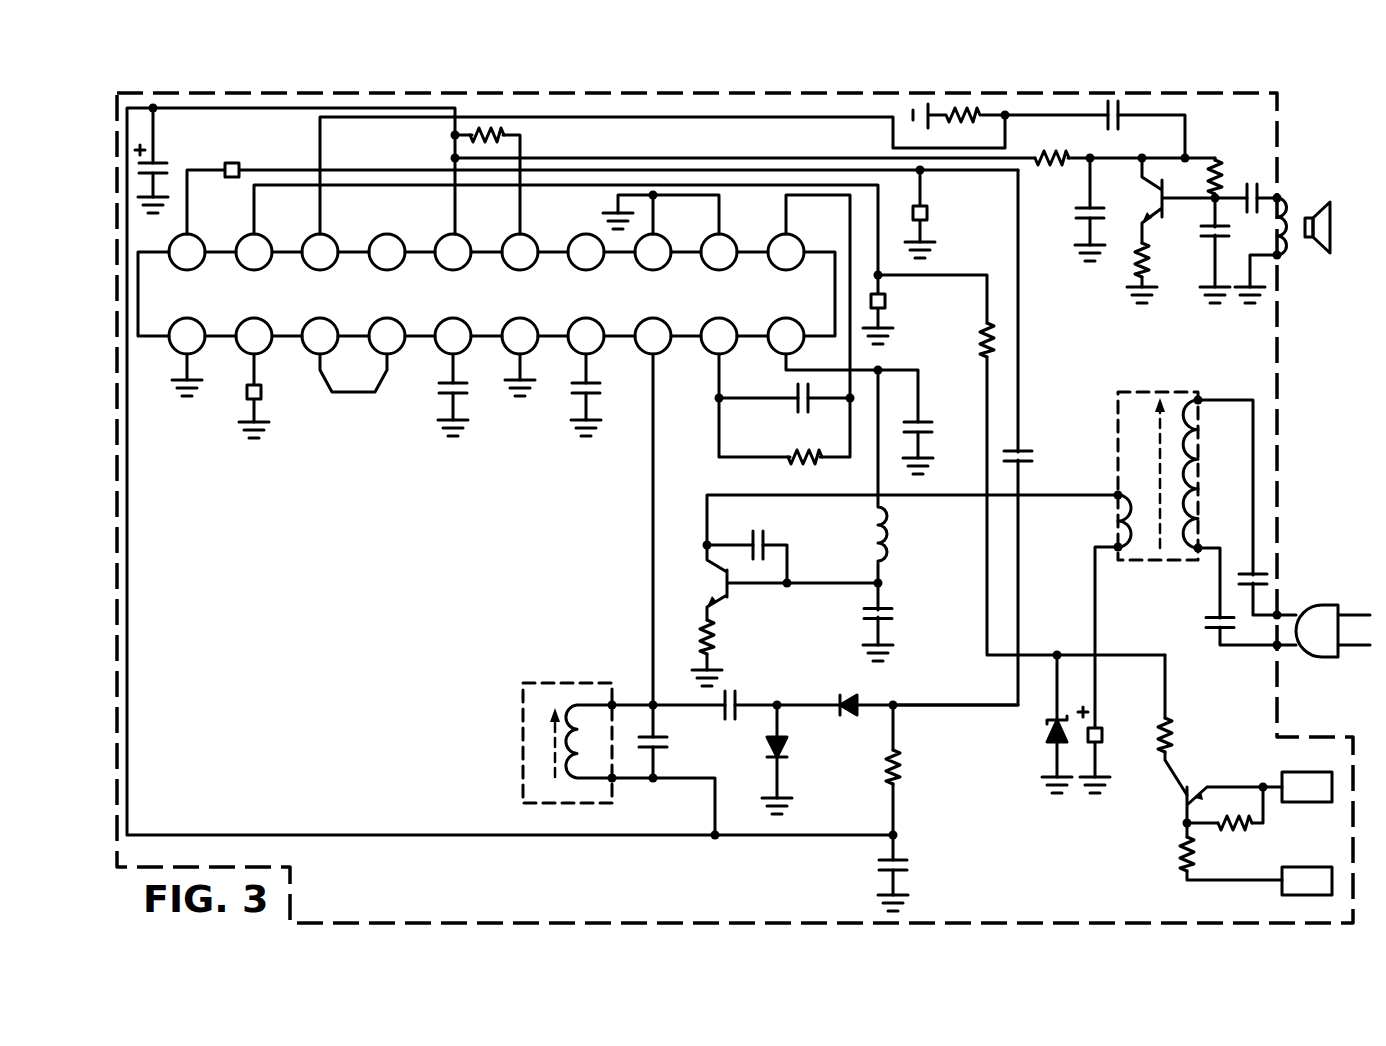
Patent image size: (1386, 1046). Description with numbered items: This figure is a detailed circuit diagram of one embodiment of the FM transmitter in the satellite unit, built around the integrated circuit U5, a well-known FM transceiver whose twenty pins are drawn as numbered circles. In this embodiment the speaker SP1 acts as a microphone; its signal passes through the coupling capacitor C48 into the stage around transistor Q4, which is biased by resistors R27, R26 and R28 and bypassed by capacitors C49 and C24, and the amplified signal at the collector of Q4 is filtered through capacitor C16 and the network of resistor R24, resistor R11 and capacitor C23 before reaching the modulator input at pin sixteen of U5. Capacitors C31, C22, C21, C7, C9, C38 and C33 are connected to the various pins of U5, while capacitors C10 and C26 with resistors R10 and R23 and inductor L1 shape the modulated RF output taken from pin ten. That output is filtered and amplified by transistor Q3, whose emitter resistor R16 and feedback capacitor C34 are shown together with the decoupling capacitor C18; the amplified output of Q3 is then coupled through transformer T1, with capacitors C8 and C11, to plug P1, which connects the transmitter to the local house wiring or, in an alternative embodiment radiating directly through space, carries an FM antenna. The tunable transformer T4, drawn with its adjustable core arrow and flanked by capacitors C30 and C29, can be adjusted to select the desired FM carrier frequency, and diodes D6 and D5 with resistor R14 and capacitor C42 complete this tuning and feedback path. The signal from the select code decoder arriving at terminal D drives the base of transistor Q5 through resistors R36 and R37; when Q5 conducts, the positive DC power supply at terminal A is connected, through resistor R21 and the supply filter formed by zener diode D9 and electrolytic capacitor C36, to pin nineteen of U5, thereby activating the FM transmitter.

The integrated circuit U5 is at (486, 294).
The capacitor C31 is at (172, 160).
The capacitor C22 is at (602, 198).
The resistor R11 is at (743, 173).
The resistor R24 is at (665, 169).
The capacitor C16 is at (1097, 132).
The resistor R27 is at (1125, 170).
The capacitor C49 is at (1071, 209).
The transistor Q4 is at (1161, 200).
The resistor R26 is at (1196, 180).
The resistor R28 is at (1166, 273).
The capacitor C24 is at (1196, 250).
The capacitor C48 is at (1248, 187).
The microphone SP1 is at (1301, 249).
The capacitor C23 is at (944, 212).
The capacitor C38 is at (597, 264).
The resistor R23 is at (1021, 465).
The capacitor C21 is at (234, 396).
The capacitor C7 is at (471, 395).
The capacitor C9 is at (604, 395).
The capacitor C10 is at (785, 405).
The resistor R10 is at (784, 340).
The capacitor C33 is at (883, 414).
The inductor L1 is at (900, 479).
The capacitor C18 is at (904, 622).
The transistor Q3 is at (900, 556).
The resistor R16 is at (729, 653).
The capacitor C34 is at (751, 550).
The capacitor C26 is at (989, 437).
The transformer T1 is at (1149, 546).
The capacitor C8 is at (1247, 510).
The capacitor C11 is at (1237, 599).
The plug P1 is at (1333, 615).
The tunable transformer T4 is at (624, 744).
The capacitor C30 is at (678, 566).
The capacitor C29 is at (755, 696).
The diode D6 is at (897, 692).
The diode D5 is at (796, 759).
The resistor R14 is at (921, 770).
The capacitor C42 is at (919, 873).
The zener diode D9 is at (1038, 722).
The electrolytic capacitor C36 is at (1117, 750).
The resistor R21 is at (1194, 725).
The transistor Q5 is at (1227, 795).
The resistor R37 is at (1225, 825).
The resistor R36 is at (1208, 851).
The positive DC power supply A is at (1307, 787).
The select code decoder signal D is at (1307, 881).